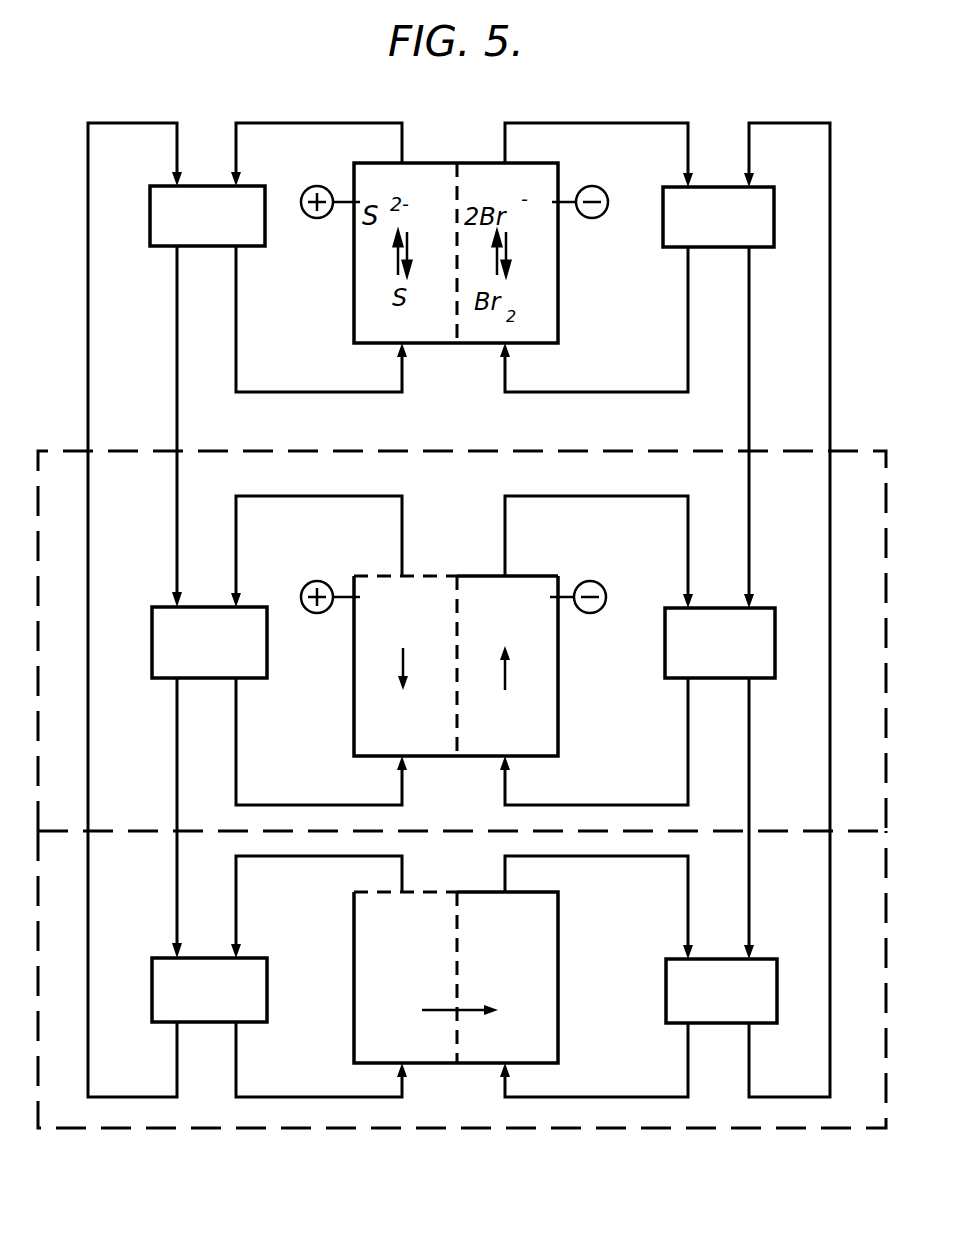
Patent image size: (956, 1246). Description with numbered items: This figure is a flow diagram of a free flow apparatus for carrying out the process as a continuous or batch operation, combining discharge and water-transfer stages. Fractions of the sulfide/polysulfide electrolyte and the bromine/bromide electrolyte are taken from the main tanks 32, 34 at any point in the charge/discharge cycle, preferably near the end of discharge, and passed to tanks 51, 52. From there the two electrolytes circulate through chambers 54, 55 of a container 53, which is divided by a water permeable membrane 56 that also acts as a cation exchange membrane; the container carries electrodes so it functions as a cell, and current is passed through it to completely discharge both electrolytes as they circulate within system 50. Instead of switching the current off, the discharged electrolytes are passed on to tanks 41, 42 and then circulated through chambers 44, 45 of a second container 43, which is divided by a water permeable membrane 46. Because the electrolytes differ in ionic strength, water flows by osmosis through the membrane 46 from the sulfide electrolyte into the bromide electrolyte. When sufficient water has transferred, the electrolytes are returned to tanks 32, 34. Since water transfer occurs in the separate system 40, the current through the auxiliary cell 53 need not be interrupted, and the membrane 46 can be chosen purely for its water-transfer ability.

The tank 32 is at (204, 232).
The tank 34 is at (716, 232).
The separate system 40 is at (778, 1128).
The tank 41 is at (205, 1006).
The tank 42 is at (718, 1006).
The container 43 is at (559, 928).
The chamber 44 is at (370, 1040).
The chamber 45 is at (530, 1041).
The water permeable membrane 46 is at (452, 908).
The system 50 is at (868, 451).
The tank 51 is at (205, 658).
The tank 52 is at (717, 658).
The container 53 is at (558, 578).
The chamber 54 is at (358, 720).
The chamber 55 is at (547, 733).
The water permeable membrane 56 is at (455, 598).